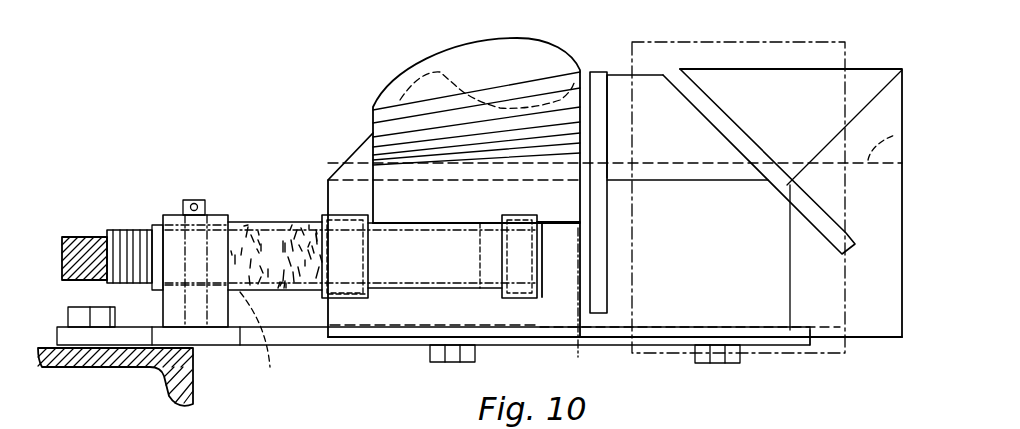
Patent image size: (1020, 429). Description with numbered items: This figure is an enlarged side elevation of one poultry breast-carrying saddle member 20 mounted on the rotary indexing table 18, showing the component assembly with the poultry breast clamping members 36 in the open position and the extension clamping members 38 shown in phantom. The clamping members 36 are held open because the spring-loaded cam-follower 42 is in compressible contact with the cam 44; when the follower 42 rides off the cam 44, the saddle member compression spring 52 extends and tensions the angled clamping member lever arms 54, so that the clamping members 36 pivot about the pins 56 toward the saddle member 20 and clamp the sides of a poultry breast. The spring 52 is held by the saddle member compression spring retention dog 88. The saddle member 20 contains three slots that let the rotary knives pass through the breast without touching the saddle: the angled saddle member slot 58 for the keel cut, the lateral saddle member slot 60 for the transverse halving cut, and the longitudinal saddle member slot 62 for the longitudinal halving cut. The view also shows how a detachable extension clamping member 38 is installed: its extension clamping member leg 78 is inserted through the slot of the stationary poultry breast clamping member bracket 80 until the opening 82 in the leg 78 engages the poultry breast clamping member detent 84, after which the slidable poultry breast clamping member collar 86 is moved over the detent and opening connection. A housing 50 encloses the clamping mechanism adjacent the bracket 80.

The rotary indexing table 18 is at (196, 400).
The poultry breast-carrying saddle member 20 is at (877, 67).
The poultry breast clamping member 36 is at (473, 40).
The extension clamping member 38 is at (697, 42).
The spring-loaded cam-follower 42 is at (135, 230).
The cam 44 is at (85, 237).
The housing 50 is at (318, 346).
The saddle member compression spring 52 is at (283, 222).
The angled clamping member lever arm 54 is at (440, 224).
The pin 56 is at (195, 200).
The angled saddle member slot 58 is at (740, 140).
The lateral saddle member slot 60 is at (596, 72).
The longitudinal saddle member slot 62 is at (897, 133).
The extension clamping member leg 78 is at (482, 223).
The stationary poultry breast clamping member bracket 80 is at (532, 215).
The opening 82 is at (378, 223).
The poultry breast clamping member detent 84 is at (324, 294).
The slidable poultry breast clamping member collar 86 is at (322, 217).
The saddle member compression spring retention dog 88 is at (268, 338).